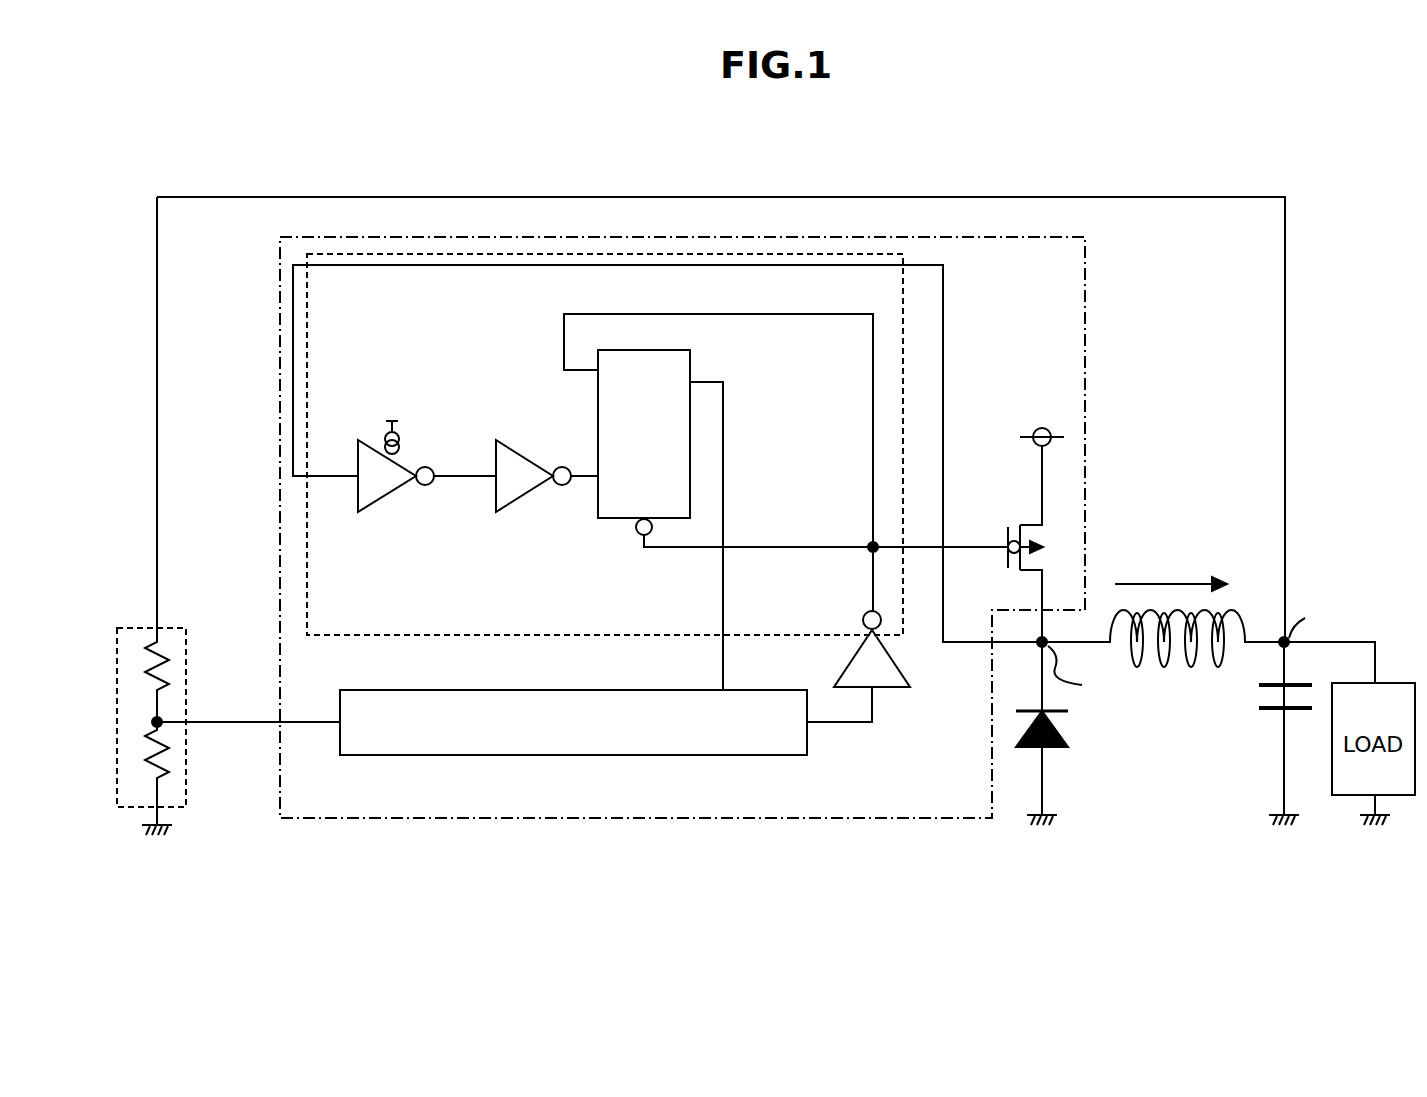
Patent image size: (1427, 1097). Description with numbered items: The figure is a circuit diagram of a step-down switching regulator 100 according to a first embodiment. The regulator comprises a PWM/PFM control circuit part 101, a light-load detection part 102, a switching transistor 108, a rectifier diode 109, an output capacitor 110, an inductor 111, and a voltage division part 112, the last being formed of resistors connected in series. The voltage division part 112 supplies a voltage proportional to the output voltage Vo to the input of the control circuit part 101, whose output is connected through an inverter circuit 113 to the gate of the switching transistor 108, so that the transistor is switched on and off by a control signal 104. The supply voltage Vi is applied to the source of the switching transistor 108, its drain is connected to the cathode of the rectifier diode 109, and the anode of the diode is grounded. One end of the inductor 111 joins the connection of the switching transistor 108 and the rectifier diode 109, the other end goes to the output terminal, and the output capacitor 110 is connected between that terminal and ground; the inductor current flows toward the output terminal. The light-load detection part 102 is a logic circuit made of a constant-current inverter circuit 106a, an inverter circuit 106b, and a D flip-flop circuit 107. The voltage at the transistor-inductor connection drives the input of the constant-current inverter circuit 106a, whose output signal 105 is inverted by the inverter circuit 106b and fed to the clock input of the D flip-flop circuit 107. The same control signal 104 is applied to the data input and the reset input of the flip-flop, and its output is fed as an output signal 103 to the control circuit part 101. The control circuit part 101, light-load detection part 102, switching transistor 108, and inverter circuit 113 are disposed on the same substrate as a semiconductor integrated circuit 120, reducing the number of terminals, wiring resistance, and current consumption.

The switching regulator 100 is at (1287, 152).
The PWM/PFM control circuit part 101 is at (575, 757).
The light-load detection part 102 is at (545, 637).
The output signal 103 is at (723, 655).
The control signal 104 is at (975, 547).
The output signal 105 is at (462, 480).
The constant-current inverter circuit 106a is at (393, 430).
The inverter circuit 106b is at (528, 457).
The D flip-flop circuit 107 is at (690, 353).
The switching transistor 108 is at (1048, 542).
The rectifier diode 109 is at (1065, 745).
The output capacitor 110 is at (1258, 718).
The inductor 111 is at (1243, 620).
The voltage division part 112 is at (127, 626).
The inverter circuit 113 is at (908, 670).
The semiconductor integrated circuit 120 is at (770, 236).